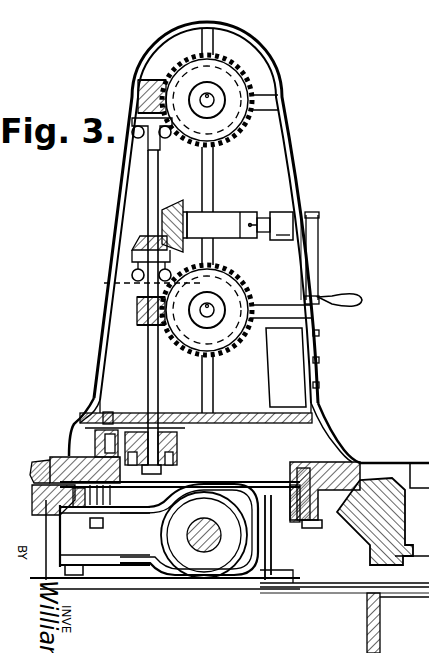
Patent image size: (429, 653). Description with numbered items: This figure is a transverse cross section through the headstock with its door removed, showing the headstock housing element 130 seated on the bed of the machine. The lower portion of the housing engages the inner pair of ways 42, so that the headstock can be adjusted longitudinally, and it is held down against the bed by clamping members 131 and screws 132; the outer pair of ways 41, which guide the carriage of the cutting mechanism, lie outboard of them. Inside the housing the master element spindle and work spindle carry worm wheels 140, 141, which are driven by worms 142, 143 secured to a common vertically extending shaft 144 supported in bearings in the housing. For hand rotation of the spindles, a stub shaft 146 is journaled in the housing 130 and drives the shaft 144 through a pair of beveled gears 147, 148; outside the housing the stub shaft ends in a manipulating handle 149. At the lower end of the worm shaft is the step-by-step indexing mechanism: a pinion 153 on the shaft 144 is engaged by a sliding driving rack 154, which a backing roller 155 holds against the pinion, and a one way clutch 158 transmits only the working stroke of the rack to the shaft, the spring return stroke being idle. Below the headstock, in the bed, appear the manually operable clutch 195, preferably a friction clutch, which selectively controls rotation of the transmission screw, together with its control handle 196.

The housing element 130 is at (282, 60).
The worm wheel 140 is at (236, 93).
The worm wheel 141 is at (262, 325).
The worm 142 is at (138, 92).
The worm 143 is at (137, 310).
The shaft 144 is at (148, 172).
The stub shaft 146 is at (293, 222).
The beveled gear 147 is at (162, 222).
The beveled gear 148 is at (132, 244).
The manipulating handle 149 is at (316, 270).
The pinion 153 is at (177, 438).
The driving rack 154 is at (103, 416).
The backing roller 155 is at (97, 444).
The one way clutch 158 is at (161, 468).
The ways 42 is at (70, 462).
The ways 41 is at (396, 478).
The clamping member 131 is at (115, 497).
The screw 132 is at (97, 528).
The manually operable clutch 195 is at (204, 556).
The control handle 196 is at (415, 594).